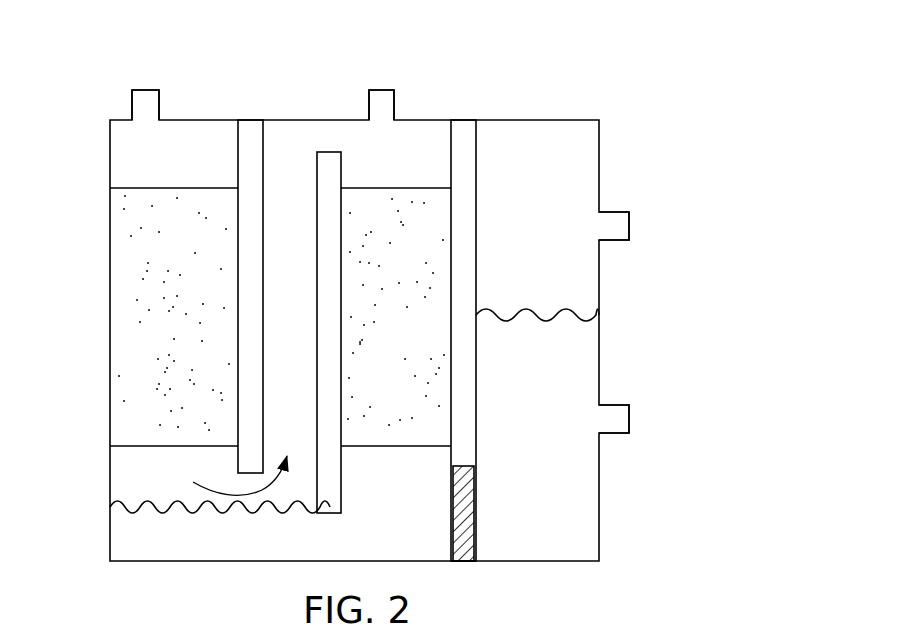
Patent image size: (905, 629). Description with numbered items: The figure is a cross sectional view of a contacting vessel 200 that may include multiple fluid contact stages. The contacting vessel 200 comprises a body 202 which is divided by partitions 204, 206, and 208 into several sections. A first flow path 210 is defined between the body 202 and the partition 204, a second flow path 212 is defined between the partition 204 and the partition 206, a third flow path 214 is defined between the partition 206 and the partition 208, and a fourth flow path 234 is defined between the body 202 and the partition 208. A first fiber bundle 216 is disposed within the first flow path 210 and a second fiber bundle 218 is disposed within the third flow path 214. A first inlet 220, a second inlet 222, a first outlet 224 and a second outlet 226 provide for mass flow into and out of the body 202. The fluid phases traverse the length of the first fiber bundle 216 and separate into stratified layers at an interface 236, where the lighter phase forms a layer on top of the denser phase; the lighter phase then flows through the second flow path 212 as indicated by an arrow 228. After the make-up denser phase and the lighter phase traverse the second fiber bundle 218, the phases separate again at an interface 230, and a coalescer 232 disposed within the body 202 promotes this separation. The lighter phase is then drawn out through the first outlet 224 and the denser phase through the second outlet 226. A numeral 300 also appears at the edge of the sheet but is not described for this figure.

The contacting vessel 200 is at (681, 62).
The body 202 is at (599, 367).
The partition 204 is at (250, 132).
The partition 206 is at (328, 508).
The partition 208 is at (463, 133).
The first flow path 210 is at (178, 142).
The second flow path 212 is at (288, 153).
The third flow path 214 is at (400, 153).
The first fiber bundle 216 is at (142, 290).
The second fiber bundle 218 is at (430, 290).
The first inlet 220 is at (160, 103).
The second inlet 222 is at (397, 103).
The first outlet 224 is at (612, 213).
The second outlet 226 is at (613, 405).
The arrow 228 is at (212, 477).
The interface 230 is at (599, 300).
The coalescer 232 is at (474, 498).
The fourth flow path 234 is at (554, 153).
The interface 236 is at (117, 505).
The water treatment system (FIG. 3) 300 is at (763, 628).